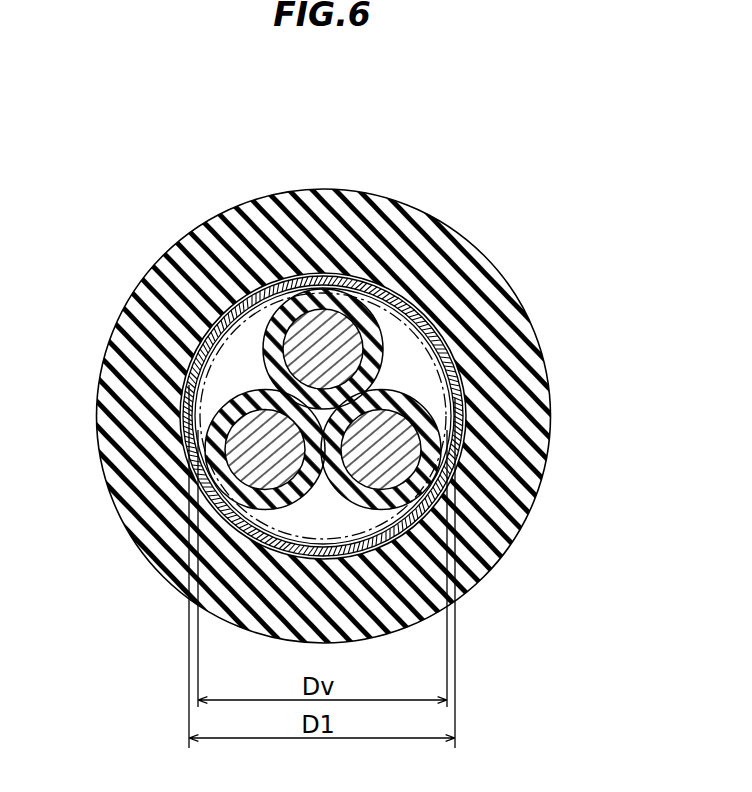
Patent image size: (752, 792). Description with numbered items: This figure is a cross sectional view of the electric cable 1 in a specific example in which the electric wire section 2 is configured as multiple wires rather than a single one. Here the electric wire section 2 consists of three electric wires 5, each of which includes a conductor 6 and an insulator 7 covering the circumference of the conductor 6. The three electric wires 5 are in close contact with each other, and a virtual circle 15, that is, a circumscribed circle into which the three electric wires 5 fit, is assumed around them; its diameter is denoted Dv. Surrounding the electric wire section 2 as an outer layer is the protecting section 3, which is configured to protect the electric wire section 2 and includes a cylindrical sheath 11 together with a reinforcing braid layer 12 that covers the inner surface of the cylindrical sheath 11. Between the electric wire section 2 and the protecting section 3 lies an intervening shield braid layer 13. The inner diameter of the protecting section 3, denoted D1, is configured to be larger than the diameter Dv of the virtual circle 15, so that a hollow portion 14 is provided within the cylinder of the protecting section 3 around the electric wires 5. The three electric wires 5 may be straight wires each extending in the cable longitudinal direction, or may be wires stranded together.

The electric cable 1 is at (449, 116).
The electric wire section 2 is at (334, 377).
The protecting section 3 is at (324, 370).
The electric wire 5 is at (334, 377).
The conductor 6 is at (423, 410).
The insulator 7 is at (395, 428).
The cylindrical sheath 11 is at (210, 240).
The reinforcing braid layer 12 is at (248, 294).
The shield braid layer 13 is at (405, 305).
The hollow portion 14 is at (352, 276).
The virtual circle 15 is at (285, 298).